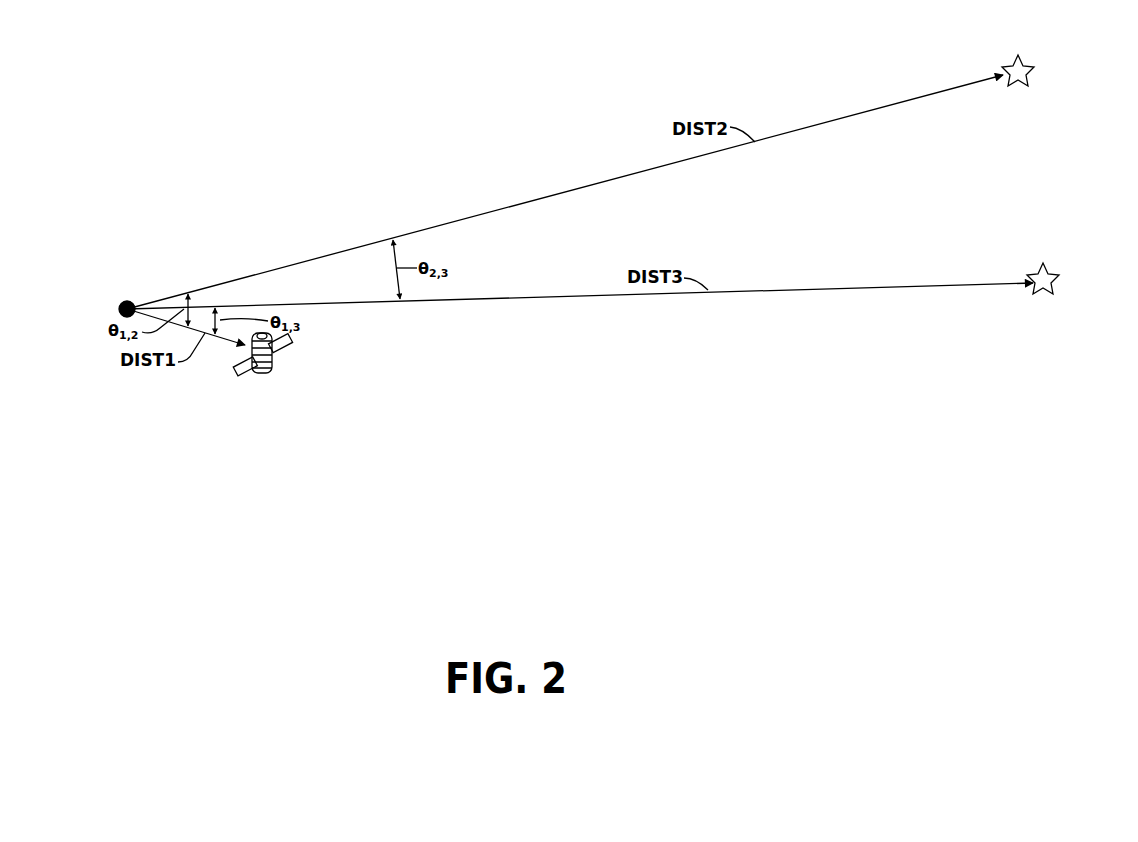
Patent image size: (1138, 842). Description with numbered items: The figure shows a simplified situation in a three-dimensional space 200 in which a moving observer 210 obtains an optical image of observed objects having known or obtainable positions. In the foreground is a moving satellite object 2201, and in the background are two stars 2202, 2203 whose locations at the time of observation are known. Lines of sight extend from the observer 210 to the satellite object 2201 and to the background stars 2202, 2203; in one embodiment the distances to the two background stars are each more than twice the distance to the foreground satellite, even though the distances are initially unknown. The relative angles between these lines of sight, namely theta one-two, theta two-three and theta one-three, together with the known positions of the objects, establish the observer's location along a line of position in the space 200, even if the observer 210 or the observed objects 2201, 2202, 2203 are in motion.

The three-dimensional space 200 is at (97, 91).
The observer 210 is at (118, 309).
The satellite object 2201 is at (280, 348).
The star 2202 is at (1036, 78).
The star 2203 is at (1061, 285).